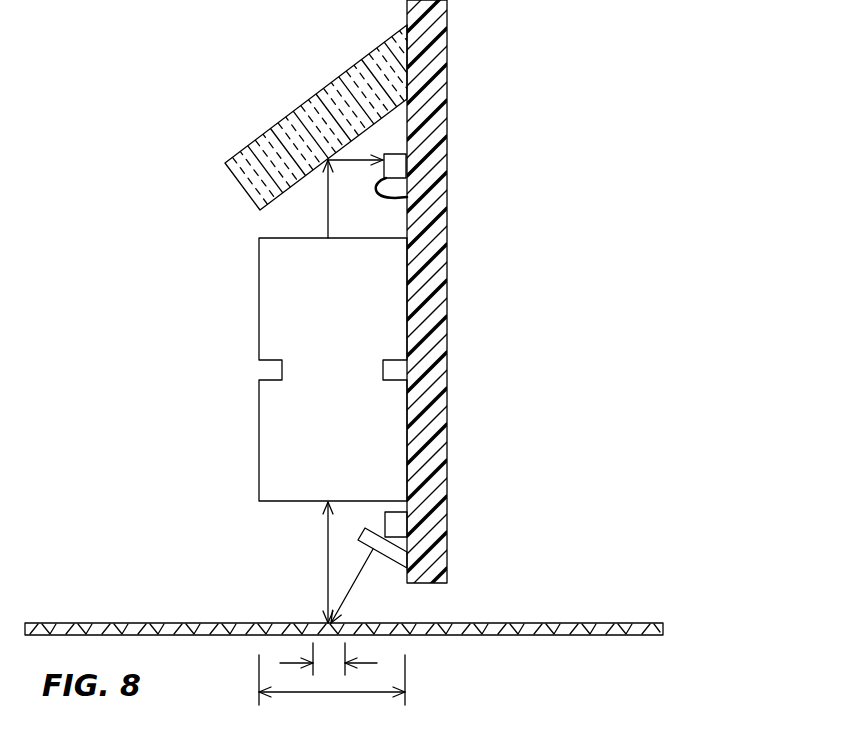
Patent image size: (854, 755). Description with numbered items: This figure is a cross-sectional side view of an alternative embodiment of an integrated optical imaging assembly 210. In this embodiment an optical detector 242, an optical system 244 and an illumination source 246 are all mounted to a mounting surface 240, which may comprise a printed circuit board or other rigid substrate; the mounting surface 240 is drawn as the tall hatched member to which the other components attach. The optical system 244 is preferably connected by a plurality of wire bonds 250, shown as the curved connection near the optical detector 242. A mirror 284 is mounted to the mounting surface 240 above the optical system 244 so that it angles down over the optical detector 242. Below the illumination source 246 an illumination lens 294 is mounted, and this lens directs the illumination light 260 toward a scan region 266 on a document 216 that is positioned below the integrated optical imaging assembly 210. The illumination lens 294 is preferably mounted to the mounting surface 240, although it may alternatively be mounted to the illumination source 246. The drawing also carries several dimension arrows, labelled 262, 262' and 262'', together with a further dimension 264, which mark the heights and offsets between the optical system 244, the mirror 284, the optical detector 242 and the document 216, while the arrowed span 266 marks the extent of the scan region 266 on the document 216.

The integrated optical imaging assembly 210 is at (133, 77).
The mounting surface 240 is at (448, 60).
The mirror 284 is at (273, 123).
The optical detector 242 is at (403, 153).
The wire bonds 250 is at (398, 200).
The optical system 244 is at (350, 339).
The illumination source 246 is at (407, 523).
The illumination lens 294 is at (407, 566).
The illumination light 260 is at (357, 585).
The height of housing above ground 262 is at (288, 562).
The height of panel above housing 262' is at (297, 199).
The horizontal offset to bracket 262'' is at (355, 188).
The horizontal offset dimension 264 is at (292, 664).
The scan region 266 is at (325, 692).
The document 216 is at (578, 623).